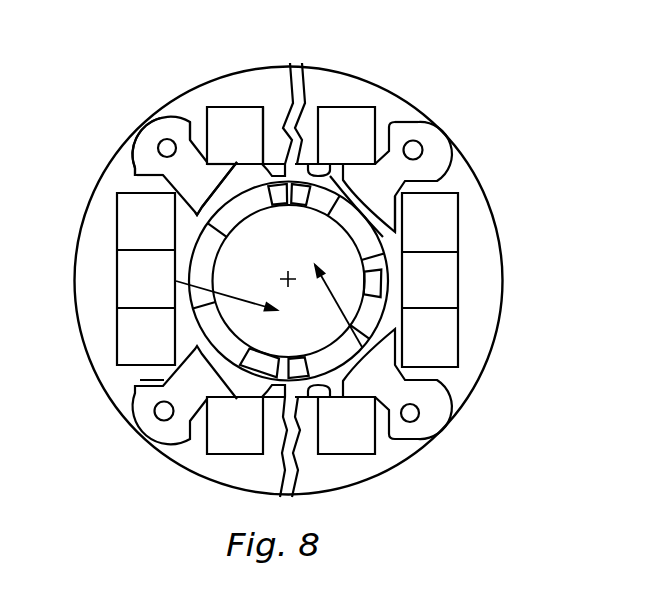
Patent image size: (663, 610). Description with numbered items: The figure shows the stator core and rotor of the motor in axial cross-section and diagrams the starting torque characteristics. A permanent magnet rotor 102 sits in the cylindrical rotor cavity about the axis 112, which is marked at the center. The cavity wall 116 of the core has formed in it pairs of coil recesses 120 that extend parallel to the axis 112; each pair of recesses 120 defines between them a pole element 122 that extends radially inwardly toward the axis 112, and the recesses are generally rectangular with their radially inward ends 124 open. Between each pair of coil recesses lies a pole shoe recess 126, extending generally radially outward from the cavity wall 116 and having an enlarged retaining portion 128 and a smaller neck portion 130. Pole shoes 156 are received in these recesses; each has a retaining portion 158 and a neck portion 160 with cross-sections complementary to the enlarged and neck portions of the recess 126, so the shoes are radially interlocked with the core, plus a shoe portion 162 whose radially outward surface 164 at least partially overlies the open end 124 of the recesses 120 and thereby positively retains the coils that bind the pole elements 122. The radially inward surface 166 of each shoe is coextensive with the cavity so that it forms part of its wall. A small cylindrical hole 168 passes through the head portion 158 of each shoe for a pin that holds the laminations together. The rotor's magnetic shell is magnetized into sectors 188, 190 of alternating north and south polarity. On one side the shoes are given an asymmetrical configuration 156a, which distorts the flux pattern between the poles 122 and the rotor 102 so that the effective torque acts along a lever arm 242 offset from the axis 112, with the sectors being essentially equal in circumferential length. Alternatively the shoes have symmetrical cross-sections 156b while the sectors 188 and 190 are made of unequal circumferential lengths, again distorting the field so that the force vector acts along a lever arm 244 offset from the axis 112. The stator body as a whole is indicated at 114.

The permanent magnet rotor 102 is at (337, 204).
The axis 112 is at (286, 277).
The stator 114 is at (378, 93).
The cavity wall 116 is at (332, 170).
The coil recesses 120 is at (224, 110).
The pole element 122 is at (307, 70).
The open ends of recesses 124 is at (236, 164).
The pole shoe recess 126 is at (160, 140).
The enlarged retaining portion 128 is at (400, 122).
The neck portion 130 is at (442, 183).
The pole shoes 156 is at (188, 120).
The asymmetrical pole shoe 156a is at (209, 281).
The symmetrical pole shoe 156b is at (391, 280).
The retaining portion 158 is at (143, 164).
The neck portion 160 is at (160, 183).
The shoe portion 162 is at (216, 166).
The radially outwardly disposed surface 164 is at (273, 123).
The radially inwardly disposed surface 166 is at (197, 216).
The cylindrical hole 168 is at (145, 172).
The magnetic sector 188 is at (366, 247).
The magnetic sector 190 is at (369, 293).
The lever arm 242 is at (285, 292).
The lever arm 244 is at (311, 261).